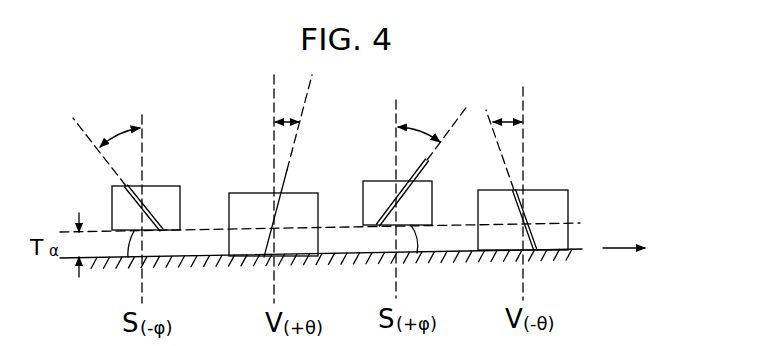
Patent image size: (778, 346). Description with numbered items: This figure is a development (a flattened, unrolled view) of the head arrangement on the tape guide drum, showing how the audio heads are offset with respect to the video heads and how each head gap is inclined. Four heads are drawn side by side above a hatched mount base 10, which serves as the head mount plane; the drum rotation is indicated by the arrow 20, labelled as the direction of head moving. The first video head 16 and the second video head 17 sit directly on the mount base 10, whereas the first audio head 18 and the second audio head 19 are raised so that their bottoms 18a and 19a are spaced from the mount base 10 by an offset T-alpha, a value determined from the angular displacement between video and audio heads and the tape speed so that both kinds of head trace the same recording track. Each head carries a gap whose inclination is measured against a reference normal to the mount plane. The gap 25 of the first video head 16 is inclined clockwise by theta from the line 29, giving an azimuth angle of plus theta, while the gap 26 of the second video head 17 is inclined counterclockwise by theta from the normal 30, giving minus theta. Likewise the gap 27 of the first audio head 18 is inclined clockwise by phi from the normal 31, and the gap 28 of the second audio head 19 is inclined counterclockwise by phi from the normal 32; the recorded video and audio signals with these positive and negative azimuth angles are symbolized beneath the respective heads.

The mount base 10 is at (189, 232).
The first video head 16 is at (304, 193).
The second video head 17 is at (548, 190).
The first audio head 18 is at (372, 181).
The second audio head 19 is at (171, 186).
The bottom of first audio head 18a is at (417, 253).
The bottom of second audio head 19a is at (122, 258).
The arrow 20 is at (615, 253).
The gap 25 is at (276, 213).
The gap 26 is at (526, 216).
The gap 27 is at (398, 202).
The gap 28 is at (134, 194).
The line perpendicular to head mount plane 29 is at (272, 100).
The normal 30 is at (524, 106).
The normal 31 is at (394, 112).
The normal 32 is at (143, 121).